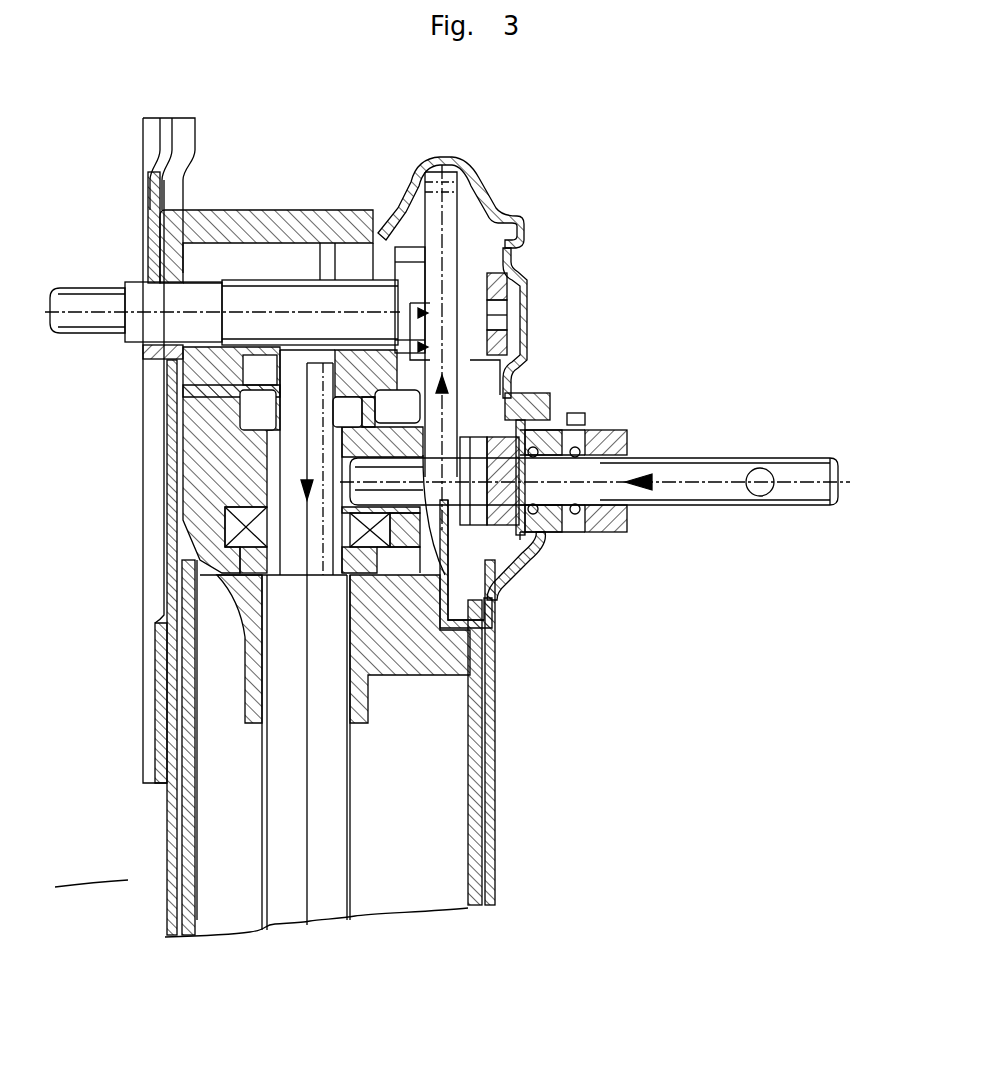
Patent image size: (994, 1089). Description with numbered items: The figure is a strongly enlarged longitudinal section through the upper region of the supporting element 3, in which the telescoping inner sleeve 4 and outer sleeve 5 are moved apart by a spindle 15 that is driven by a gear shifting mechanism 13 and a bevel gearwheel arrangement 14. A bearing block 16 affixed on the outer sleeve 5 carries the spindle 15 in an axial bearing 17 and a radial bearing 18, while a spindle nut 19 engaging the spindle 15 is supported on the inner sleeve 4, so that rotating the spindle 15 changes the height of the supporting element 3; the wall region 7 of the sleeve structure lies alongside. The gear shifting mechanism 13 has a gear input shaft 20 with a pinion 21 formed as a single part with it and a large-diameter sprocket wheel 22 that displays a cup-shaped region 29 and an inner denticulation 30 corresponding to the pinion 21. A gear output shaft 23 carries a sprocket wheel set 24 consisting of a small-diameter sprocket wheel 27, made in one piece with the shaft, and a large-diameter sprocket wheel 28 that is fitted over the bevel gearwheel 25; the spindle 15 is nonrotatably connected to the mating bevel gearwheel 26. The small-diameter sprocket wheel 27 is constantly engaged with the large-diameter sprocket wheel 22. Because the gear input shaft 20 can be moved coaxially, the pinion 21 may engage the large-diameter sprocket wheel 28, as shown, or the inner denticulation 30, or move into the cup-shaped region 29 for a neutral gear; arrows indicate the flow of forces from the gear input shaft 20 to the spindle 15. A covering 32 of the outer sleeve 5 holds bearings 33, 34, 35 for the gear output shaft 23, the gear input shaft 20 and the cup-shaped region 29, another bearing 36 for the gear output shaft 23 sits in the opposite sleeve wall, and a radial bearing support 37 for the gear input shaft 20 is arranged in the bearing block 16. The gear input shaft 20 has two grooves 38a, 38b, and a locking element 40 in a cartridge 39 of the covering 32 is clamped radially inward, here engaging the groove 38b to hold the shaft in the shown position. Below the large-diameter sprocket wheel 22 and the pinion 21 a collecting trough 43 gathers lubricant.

The supporting element 3 is at (125, 880).
The inner sleeve 4 is at (187, 900).
The outer sleeve 5 is at (170, 833).
The bracket plate 7 is at (152, 455).
The gear shifting mechanism 13 is at (492, 400).
The bevel gearwheel arrangement 14 is at (424, 355).
The spindle 15 is at (285, 692).
The bearing block 16 is at (530, 400).
The axial bearing 17 is at (233, 530).
The radial bearing 18 is at (240, 480).
The spindle nut 19 is at (253, 605).
The gear input shaft 20 is at (620, 462).
The pinion 21 is at (497, 567).
The large-diameter sprocket wheel 22 is at (485, 600).
The gear output shaft 23 is at (135, 300).
The sprocket wheel set 24 is at (398, 245).
The bevel gearwheel 25 is at (408, 290).
The bevel gearwheel 26 is at (215, 370).
The small-diameter sprocket wheel 27 is at (470, 300).
The large-diameter sprocket wheel 28 is at (442, 205).
The cup-shaped region 29 is at (475, 560).
The inner denticulation 30 is at (537, 533).
The covering 32 is at (462, 345).
The bearing 33 is at (617, 433).
The bearing 34 is at (513, 390).
The bearing 35 is at (477, 388).
The bearing 36 is at (150, 353).
The radial bearing support 37 is at (470, 640).
The groove 38a is at (545, 520).
The groove 38b is at (600, 490).
The cartridge 39 is at (585, 415).
The locking element 40 is at (672, 468).
The collecting trough 43 is at (495, 650).